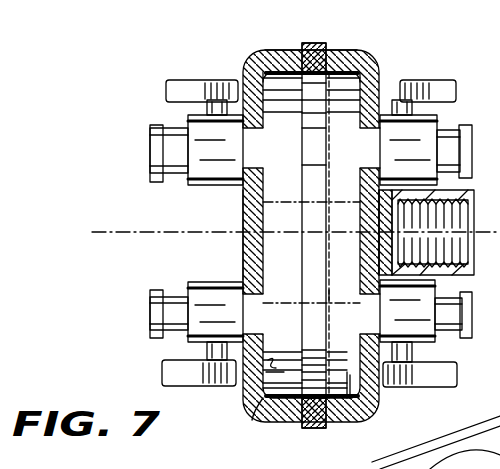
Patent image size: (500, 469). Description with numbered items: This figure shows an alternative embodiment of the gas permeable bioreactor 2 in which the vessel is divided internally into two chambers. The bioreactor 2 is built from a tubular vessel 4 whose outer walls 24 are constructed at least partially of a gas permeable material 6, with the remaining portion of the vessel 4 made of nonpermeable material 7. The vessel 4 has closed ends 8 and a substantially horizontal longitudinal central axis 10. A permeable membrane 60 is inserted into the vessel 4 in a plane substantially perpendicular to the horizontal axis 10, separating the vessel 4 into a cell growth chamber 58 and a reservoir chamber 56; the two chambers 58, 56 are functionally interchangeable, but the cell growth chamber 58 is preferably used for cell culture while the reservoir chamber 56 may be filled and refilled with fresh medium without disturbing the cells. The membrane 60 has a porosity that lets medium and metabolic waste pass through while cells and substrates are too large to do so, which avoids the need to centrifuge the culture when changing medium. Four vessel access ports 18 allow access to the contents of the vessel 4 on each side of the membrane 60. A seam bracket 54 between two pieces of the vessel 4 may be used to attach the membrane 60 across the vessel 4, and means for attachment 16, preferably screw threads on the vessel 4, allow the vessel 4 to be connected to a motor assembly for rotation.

The bioreactor 2 is at (188, 60).
The tubular vessel 4 is at (291, 189).
The gas permeable material 6 is at (378, 58).
The nonpermeable material 7 is at (262, 54).
The closed ends 8 is at (243, 200).
The horizontal longitudinal central axis 10 is at (121, 204).
The means for attachment 16 is at (478, 193).
The vessel access port 18 is at (150, 140).
The outer walls 24 is at (252, 420).
The seam bracket 54 is at (312, 44).
The reservoir chamber 56 is at (347, 373).
The cell growth chamber 58 is at (268, 366).
The permeable membrane 60 is at (330, 300).